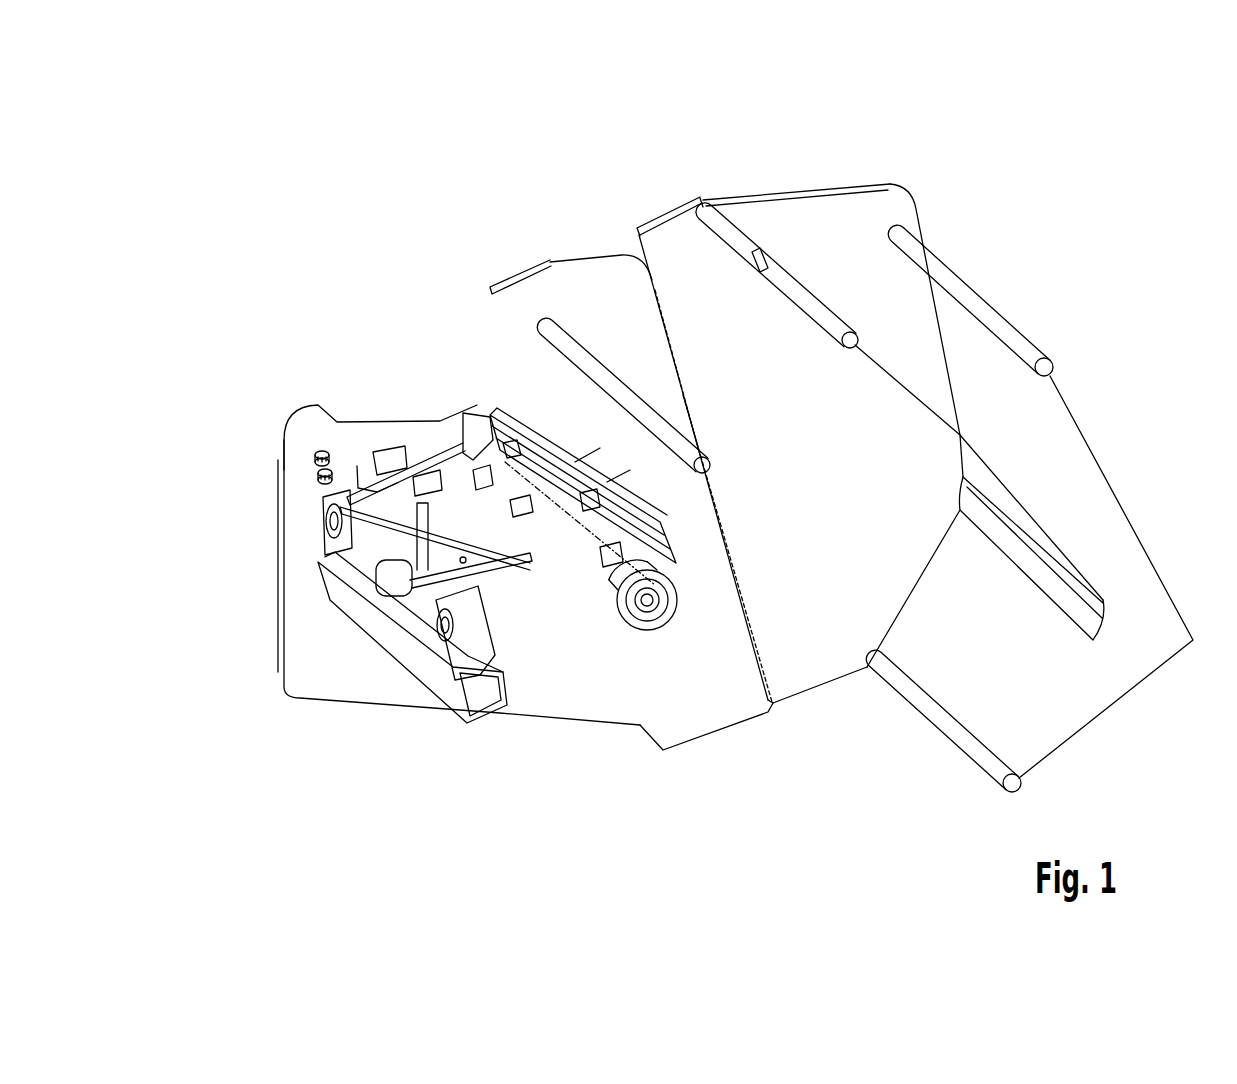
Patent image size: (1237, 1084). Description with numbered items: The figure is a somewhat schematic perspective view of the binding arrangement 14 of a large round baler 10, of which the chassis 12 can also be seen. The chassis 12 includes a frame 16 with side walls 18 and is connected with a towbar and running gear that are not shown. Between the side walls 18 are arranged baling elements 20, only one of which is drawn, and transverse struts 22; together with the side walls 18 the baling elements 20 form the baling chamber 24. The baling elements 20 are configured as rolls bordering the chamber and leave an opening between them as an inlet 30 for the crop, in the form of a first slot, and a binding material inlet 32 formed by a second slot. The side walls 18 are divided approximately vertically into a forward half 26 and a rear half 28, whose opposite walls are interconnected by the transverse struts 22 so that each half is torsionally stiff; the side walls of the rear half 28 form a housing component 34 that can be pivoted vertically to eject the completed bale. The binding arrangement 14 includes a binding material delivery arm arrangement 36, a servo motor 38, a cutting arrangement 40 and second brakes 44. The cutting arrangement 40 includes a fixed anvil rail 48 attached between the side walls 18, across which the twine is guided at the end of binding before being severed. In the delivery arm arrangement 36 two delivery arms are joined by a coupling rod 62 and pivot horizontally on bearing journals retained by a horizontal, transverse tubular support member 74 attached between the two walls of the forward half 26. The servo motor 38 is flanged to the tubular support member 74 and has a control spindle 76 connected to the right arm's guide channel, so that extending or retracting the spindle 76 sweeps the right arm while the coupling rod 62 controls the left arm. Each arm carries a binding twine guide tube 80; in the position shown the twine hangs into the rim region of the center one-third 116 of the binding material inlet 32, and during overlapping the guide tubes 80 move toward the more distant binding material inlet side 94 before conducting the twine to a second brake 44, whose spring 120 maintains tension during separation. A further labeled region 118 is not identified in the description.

The large round baler 10 is at (1137, 356).
The chassis 12 is at (828, 808).
The binding arrangement 14 is at (433, 431).
The frame 16 is at (728, 736).
The side walls 18 is at (680, 262).
The baling elements 20 is at (640, 613).
The transverse struts 22 is at (1093, 617).
The baling chamber 24 is at (759, 488).
The forward half 26 is at (719, 705).
The rear half 28 is at (839, 640).
The inlet 30 is at (647, 683).
The binding material inlet 32 is at (647, 600).
The housing component 34 is at (871, 213).
The binding material delivery arm arrangement 36 is at (465, 520).
The servo motor 38 is at (393, 585).
The cutting arrangement 40 is at (477, 413).
The second brakes 44 is at (556, 530).
The anvil rail 48 is at (570, 555).
The coupling rod 62 is at (327, 525).
The tubular support member 74 is at (432, 650).
The control spindle 76 is at (327, 497).
The binding twine guide tube 80 is at (610, 480).
The binding material inlet side 94 is at (537, 425).
The center one-third 116 is at (573, 460).
The slot 118 is at (607, 482).
The spring 120 is at (532, 530).